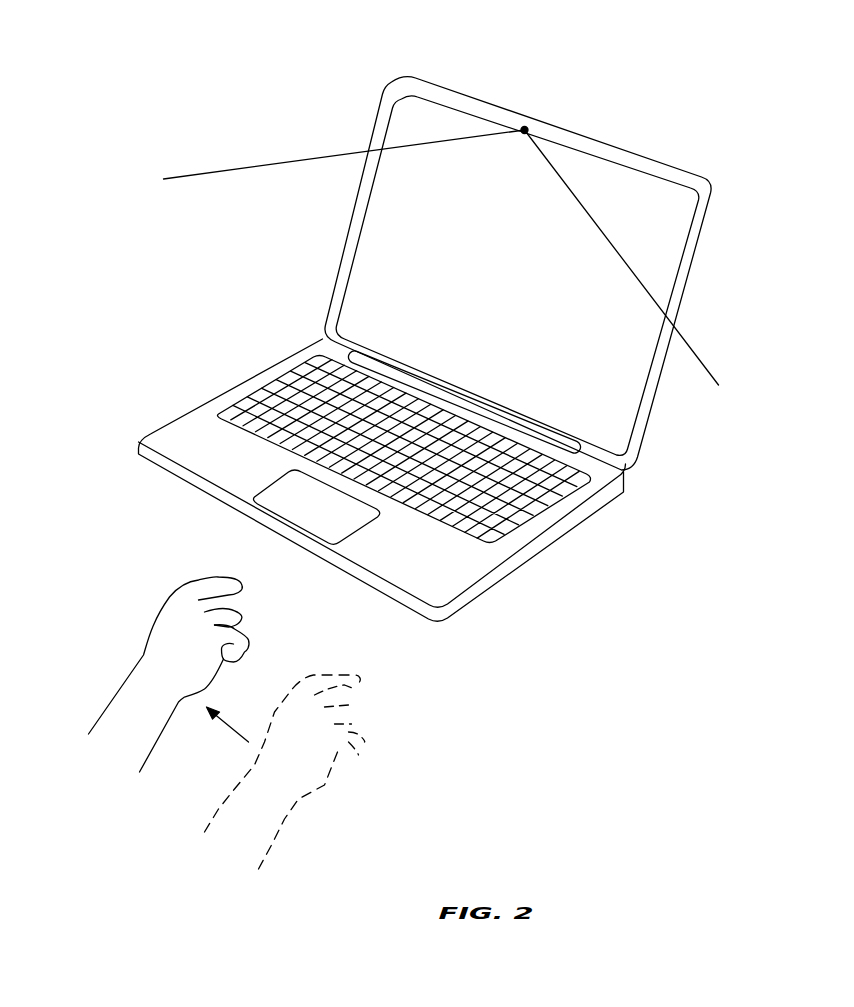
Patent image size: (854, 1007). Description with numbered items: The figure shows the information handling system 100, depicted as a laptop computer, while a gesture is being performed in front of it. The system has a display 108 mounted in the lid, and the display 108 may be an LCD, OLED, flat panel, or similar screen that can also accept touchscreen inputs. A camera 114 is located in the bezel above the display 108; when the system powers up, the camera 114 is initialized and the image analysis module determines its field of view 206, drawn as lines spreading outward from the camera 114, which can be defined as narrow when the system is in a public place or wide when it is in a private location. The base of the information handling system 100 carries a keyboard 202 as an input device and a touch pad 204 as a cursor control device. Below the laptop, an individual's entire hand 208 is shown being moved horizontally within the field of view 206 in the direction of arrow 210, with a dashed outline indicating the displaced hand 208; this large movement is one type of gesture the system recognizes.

The information handling system 100 is at (311, 44).
The display 108 is at (605, 408).
The camera 114 is at (523, 128).
The keyboard 202 is at (290, 398).
The touch pad 204 is at (280, 508).
The field of view 206 is at (332, 153).
The hand 208 is at (148, 668).
The arrow 210 is at (283, 772).